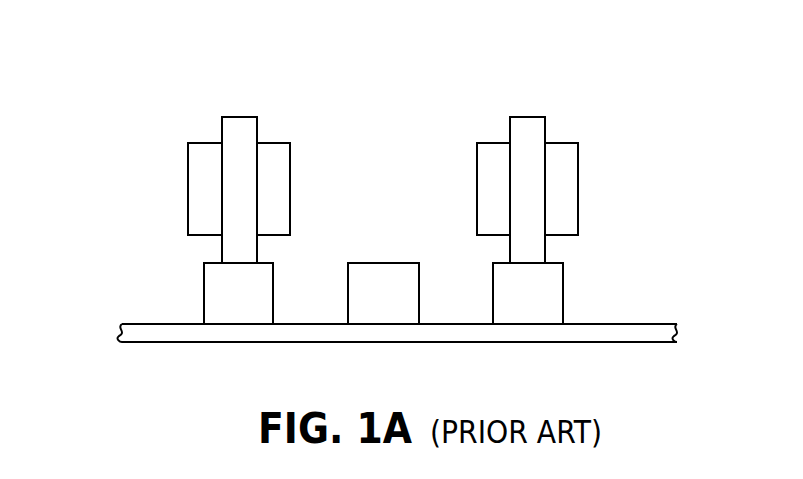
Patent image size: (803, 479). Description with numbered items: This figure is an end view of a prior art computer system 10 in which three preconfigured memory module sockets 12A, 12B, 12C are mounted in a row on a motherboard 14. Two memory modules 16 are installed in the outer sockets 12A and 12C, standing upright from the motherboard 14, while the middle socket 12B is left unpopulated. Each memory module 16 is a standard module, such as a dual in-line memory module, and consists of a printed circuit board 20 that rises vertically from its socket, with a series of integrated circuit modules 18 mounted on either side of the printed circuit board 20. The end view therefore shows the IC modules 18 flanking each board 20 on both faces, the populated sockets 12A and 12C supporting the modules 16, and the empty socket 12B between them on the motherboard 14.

The computer system 10 is at (126, 91).
The memory module socket 12A is at (204, 282).
The memory module socket 12B is at (348, 305).
The memory module socket 12C is at (563, 283).
The motherboard 14 is at (657, 323).
The memory module 16 is at (206, 126).
The integrated circuit module 18 is at (188, 187).
The printed circuit board 20 is at (238, 130).